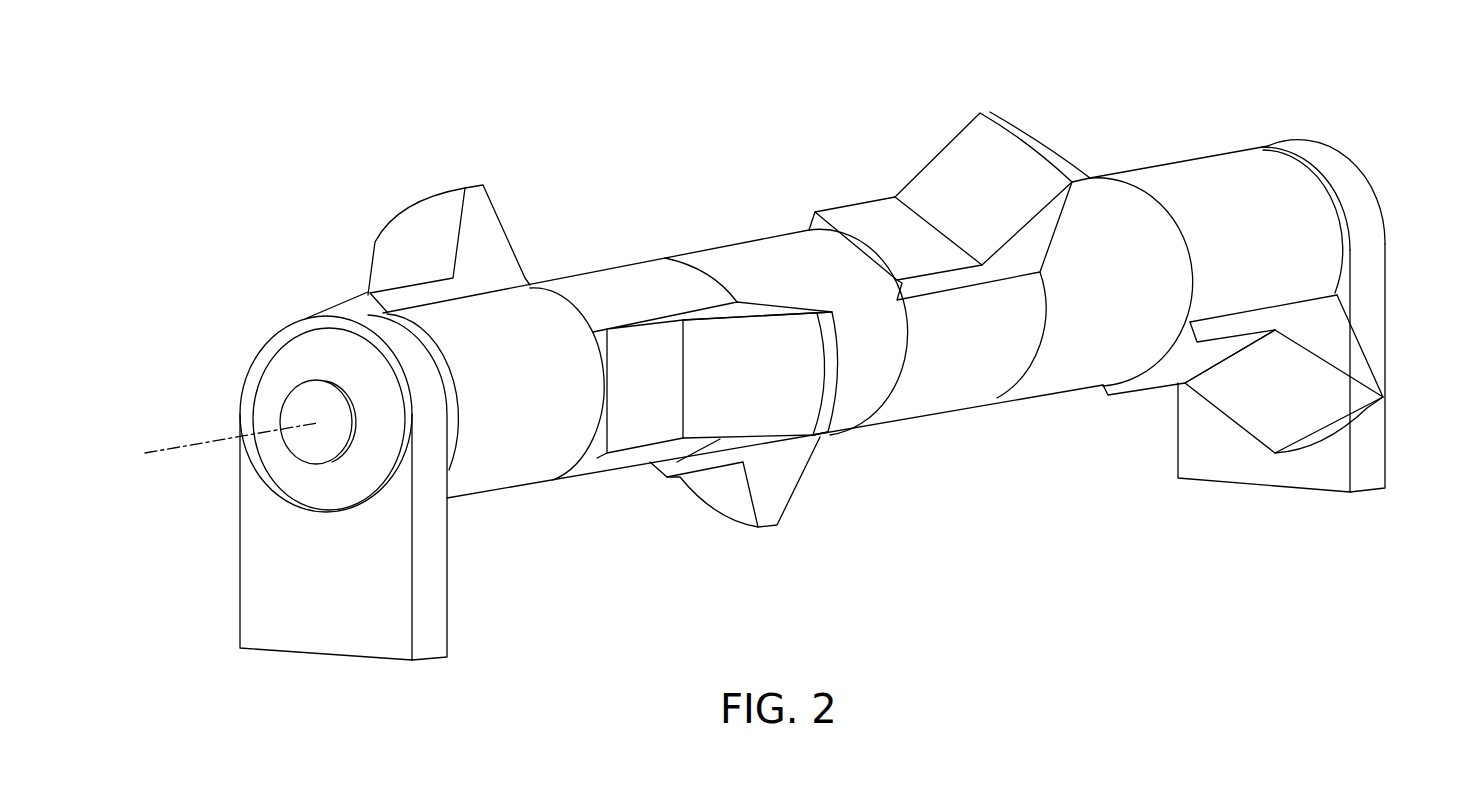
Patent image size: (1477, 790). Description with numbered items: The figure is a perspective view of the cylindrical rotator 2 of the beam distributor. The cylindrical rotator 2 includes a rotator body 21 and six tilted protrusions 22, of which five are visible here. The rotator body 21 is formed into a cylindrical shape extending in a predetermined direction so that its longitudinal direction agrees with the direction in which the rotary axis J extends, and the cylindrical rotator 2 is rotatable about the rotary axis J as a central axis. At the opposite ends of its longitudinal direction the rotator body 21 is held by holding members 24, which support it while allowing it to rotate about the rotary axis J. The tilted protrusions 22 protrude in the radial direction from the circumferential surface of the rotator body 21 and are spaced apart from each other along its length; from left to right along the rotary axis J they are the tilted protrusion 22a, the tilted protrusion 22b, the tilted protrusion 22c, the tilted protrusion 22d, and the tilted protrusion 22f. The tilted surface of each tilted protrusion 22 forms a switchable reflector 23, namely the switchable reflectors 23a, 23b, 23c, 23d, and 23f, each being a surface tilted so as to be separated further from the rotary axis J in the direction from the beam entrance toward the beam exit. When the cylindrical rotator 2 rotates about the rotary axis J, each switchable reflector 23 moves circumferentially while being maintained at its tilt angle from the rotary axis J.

The cylindrical rotator 2 is at (1163, 82).
The rotator body 21 is at (753, 240).
The tilted protrusion 22 is at (924, 335).
The tilted protrusion 22a is at (473, 183).
The tilted protrusion 22b is at (833, 380).
The tilted protrusion 22c is at (768, 528).
The tilted protrusion 22d is at (1035, 132).
The tilted protrusion 22f is at (1362, 417).
The switchable reflector 23 is at (871, 335).
The switchable reflector 23a is at (408, 237).
The switchable reflector 23b is at (782, 410).
The switchable reflector 23c is at (718, 490).
The switchable reflector 23d is at (970, 163).
The switchable reflector 23f is at (1247, 407).
The holding member 24 is at (258, 608).
The rotary axis J is at (186, 447).